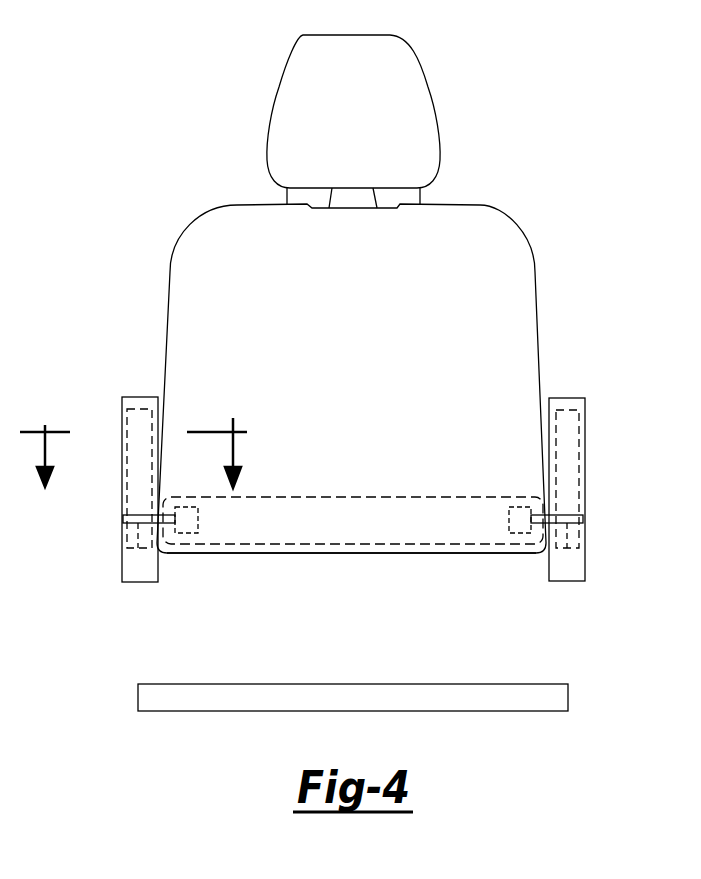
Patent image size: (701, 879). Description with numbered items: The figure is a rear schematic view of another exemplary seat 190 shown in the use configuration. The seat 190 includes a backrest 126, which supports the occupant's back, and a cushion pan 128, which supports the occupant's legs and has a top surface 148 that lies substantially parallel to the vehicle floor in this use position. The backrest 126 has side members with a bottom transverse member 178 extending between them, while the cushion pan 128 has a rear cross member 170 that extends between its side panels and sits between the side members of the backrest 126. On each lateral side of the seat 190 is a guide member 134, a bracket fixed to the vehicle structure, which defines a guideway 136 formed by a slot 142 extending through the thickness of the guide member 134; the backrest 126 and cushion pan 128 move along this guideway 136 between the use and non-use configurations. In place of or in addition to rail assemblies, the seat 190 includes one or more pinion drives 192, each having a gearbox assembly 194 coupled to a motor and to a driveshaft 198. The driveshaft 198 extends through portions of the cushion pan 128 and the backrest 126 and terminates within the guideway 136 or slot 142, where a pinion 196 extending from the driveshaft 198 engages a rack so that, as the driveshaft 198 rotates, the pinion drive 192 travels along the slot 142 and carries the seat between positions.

The seat 190 is at (353, 373).
The backrest 126 is at (180, 243).
The guide member 134 is at (140, 397).
The guideway 136 is at (353, 478).
The slot 142 is at (138, 477).
The top surface 148 is at (353, 514).
The cushion pan 128 is at (353, 514).
The rear cross member 170 is at (358, 520).
The bottom transverse member 178 is at (437, 553).
The pinion drive 192 is at (350, 568).
The gearbox assembly 194 is at (187, 530).
The pinion 196 is at (352, 586).
The driveshaft 198 is at (140, 548).